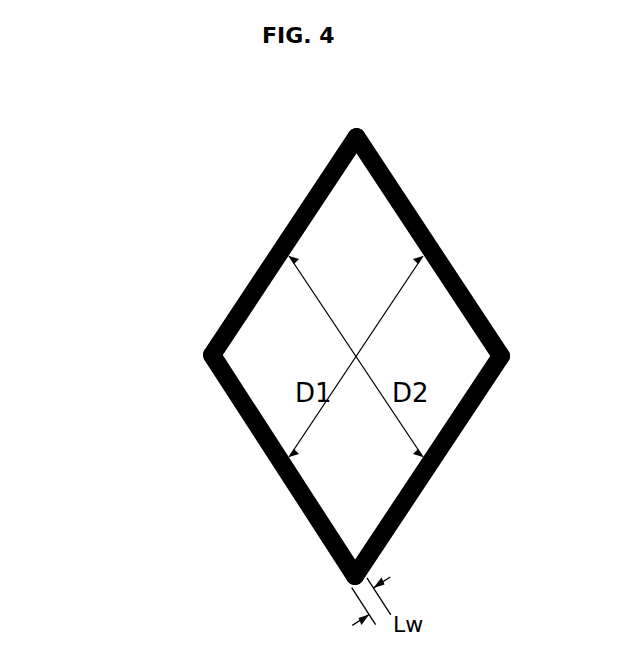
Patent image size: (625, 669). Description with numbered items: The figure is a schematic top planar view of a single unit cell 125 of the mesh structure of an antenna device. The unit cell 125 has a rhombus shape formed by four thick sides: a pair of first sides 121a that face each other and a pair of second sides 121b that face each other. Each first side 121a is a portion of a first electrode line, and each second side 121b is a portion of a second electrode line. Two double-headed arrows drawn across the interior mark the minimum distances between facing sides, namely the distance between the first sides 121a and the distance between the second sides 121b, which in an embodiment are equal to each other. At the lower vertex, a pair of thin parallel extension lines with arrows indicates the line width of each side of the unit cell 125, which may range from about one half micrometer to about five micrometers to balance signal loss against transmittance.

The unit cell 125 is at (87, 98).
The first sides 121a is at (442, 245).
The second sides 121b is at (275, 246).